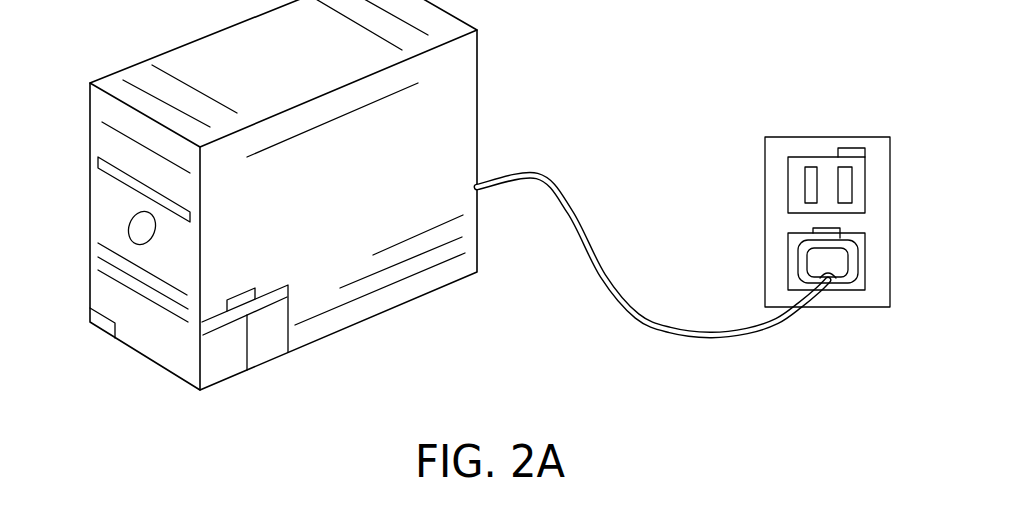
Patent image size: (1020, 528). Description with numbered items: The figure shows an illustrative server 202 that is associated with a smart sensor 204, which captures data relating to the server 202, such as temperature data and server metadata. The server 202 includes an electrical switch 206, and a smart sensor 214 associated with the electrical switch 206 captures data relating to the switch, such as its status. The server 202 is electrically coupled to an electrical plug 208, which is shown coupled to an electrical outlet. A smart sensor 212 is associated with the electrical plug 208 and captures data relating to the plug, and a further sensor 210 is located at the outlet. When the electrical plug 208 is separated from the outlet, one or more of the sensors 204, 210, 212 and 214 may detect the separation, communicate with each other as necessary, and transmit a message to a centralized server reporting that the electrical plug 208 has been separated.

The server 202 is at (478, 66).
The smart sensor 204 is at (105, 318).
The electrical switch 206 is at (263, 364).
The electrical plug 208 is at (702, 343).
The sensor 210 is at (852, 148).
The smart sensor 212 is at (827, 232).
The smart sensor 214 is at (243, 293).